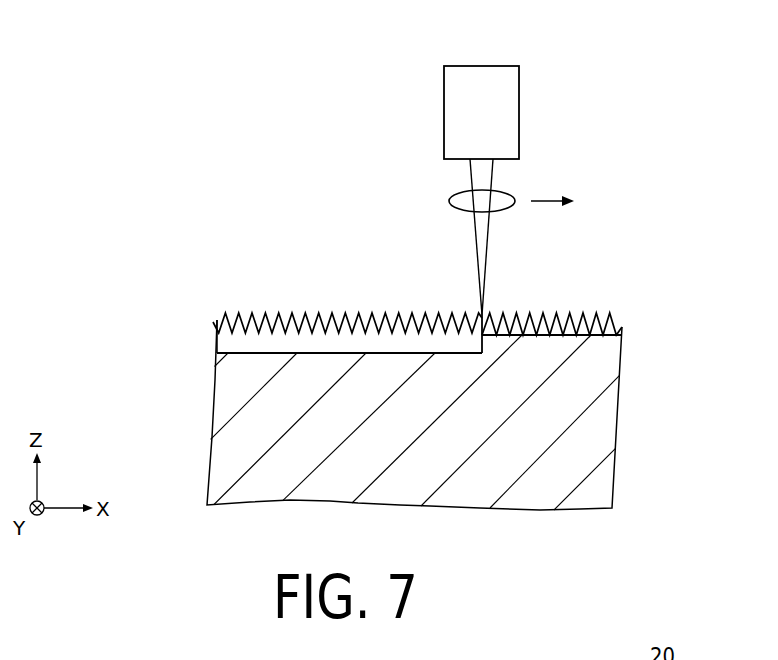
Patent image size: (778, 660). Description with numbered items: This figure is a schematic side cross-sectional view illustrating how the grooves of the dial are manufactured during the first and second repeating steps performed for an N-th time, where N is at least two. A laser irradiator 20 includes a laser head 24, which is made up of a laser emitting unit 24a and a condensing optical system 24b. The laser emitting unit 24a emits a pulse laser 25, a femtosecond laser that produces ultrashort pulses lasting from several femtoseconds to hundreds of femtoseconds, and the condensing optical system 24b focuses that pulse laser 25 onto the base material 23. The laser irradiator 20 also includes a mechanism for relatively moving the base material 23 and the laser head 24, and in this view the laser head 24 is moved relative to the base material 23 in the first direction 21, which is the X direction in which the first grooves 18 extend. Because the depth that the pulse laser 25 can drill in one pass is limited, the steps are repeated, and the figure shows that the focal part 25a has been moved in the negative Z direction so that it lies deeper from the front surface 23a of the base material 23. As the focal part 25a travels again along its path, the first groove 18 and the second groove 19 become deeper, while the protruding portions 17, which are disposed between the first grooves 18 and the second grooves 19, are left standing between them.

The laser irradiator 20 is at (634, 73).
The laser head 24 is at (375, 65).
The laser emitting unit 24a is at (448, 87).
The condensing optical system 24b is at (459, 197).
The first direction 21 is at (550, 197).
The pulse laser 25 is at (492, 252).
The focal part 25a is at (495, 332).
The base material 23 is at (598, 427).
The front surface 23a is at (215, 313).
The first groove 18 is at (242, 353).
The protruding portion 17 is at (290, 312).
The second groove 19 is at (598, 318).